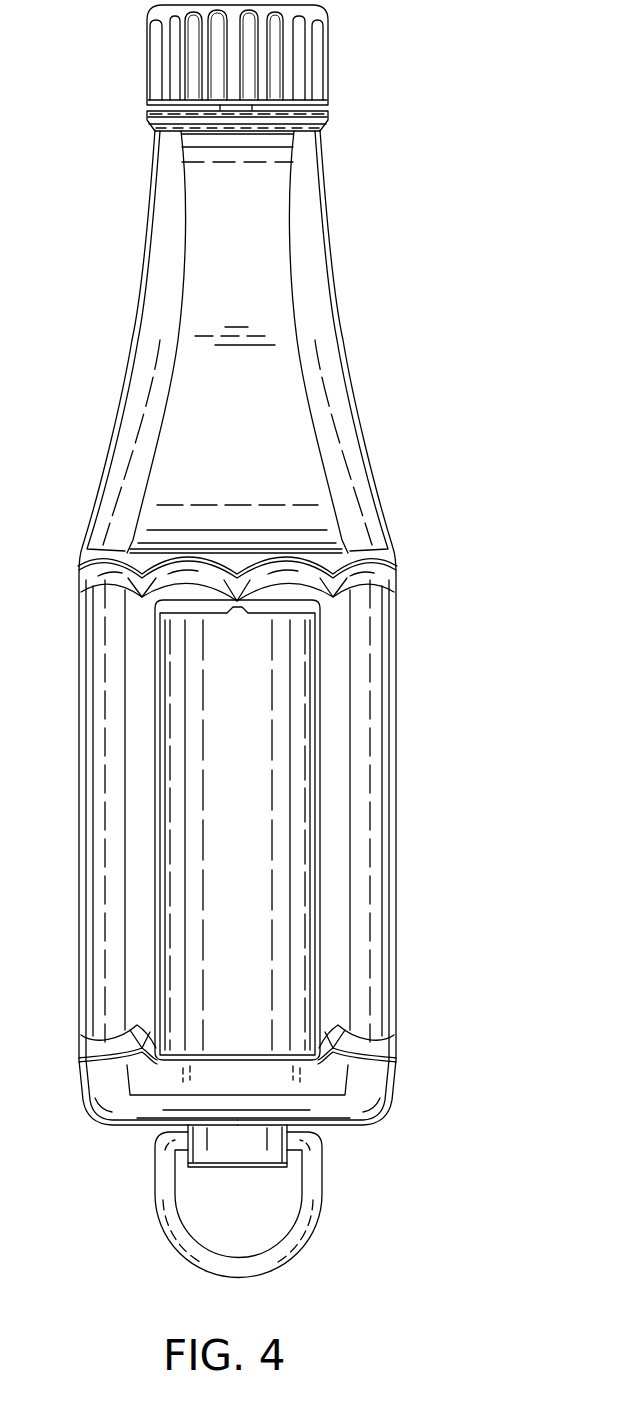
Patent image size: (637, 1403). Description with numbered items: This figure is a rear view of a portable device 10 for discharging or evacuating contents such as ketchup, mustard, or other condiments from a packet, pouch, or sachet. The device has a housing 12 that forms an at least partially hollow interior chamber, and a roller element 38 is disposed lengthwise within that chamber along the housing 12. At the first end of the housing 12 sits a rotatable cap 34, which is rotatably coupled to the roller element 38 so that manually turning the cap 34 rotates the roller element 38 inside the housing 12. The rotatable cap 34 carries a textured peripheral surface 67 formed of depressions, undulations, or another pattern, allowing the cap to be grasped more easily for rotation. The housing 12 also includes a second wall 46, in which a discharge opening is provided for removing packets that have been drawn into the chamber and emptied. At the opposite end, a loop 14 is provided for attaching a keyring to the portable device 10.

The portable device 10 is at (400, 40).
The housing 12 is at (163, 215).
The loop 14 is at (293, 1235).
The rotatable cap 34 is at (193, 53).
The roller element 38 is at (237, 802).
The second wall 46 is at (338, 665).
The textured peripheral surface 67 is at (267, 52).